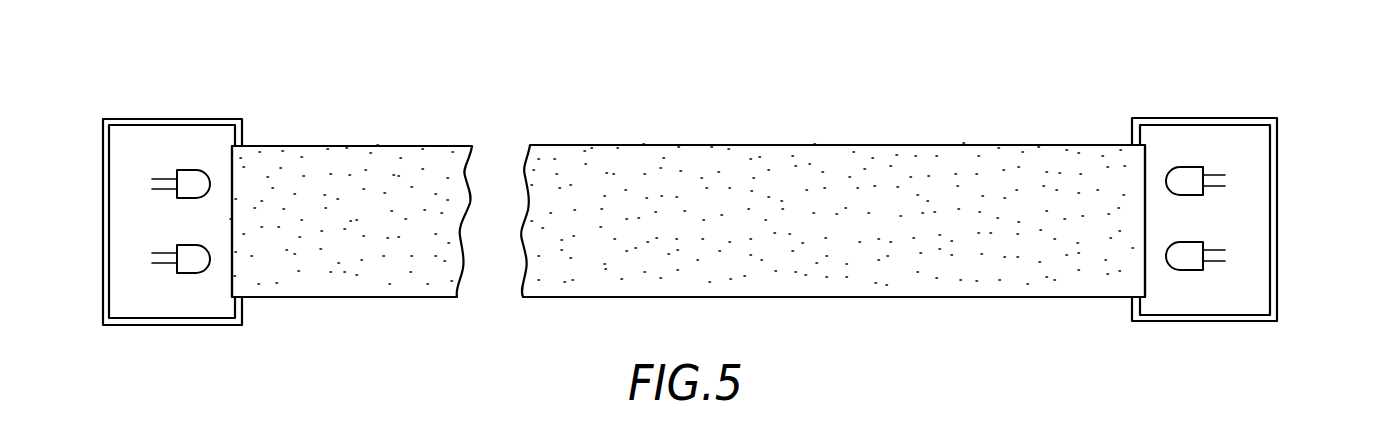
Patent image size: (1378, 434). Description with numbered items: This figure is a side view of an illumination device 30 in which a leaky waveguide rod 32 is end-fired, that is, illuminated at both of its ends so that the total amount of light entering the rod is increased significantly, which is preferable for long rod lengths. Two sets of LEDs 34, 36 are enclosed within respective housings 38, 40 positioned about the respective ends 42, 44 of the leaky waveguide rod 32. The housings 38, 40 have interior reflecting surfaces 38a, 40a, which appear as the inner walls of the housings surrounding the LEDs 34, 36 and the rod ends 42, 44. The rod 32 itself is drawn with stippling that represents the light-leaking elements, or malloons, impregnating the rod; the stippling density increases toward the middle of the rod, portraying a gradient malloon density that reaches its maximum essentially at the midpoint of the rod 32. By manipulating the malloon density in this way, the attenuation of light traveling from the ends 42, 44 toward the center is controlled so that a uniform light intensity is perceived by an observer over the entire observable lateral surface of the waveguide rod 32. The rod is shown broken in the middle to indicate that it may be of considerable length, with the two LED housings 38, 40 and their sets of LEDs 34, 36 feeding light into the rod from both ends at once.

The illumination device 30 is at (381, 112).
The leaky waveguide rod 32 is at (948, 292).
The LEDs 34 is at (1198, 172).
The LEDs 36 is at (200, 176).
The housing 38 is at (1278, 280).
The interior reflecting surface 38a is at (1268, 216).
The housing 40 is at (100, 272).
The interior reflecting surface 40a is at (110, 185).
The end of the leaky waveguide rod 42 is at (1148, 280).
The end of the leaky waveguide rod 44 is at (230, 268).